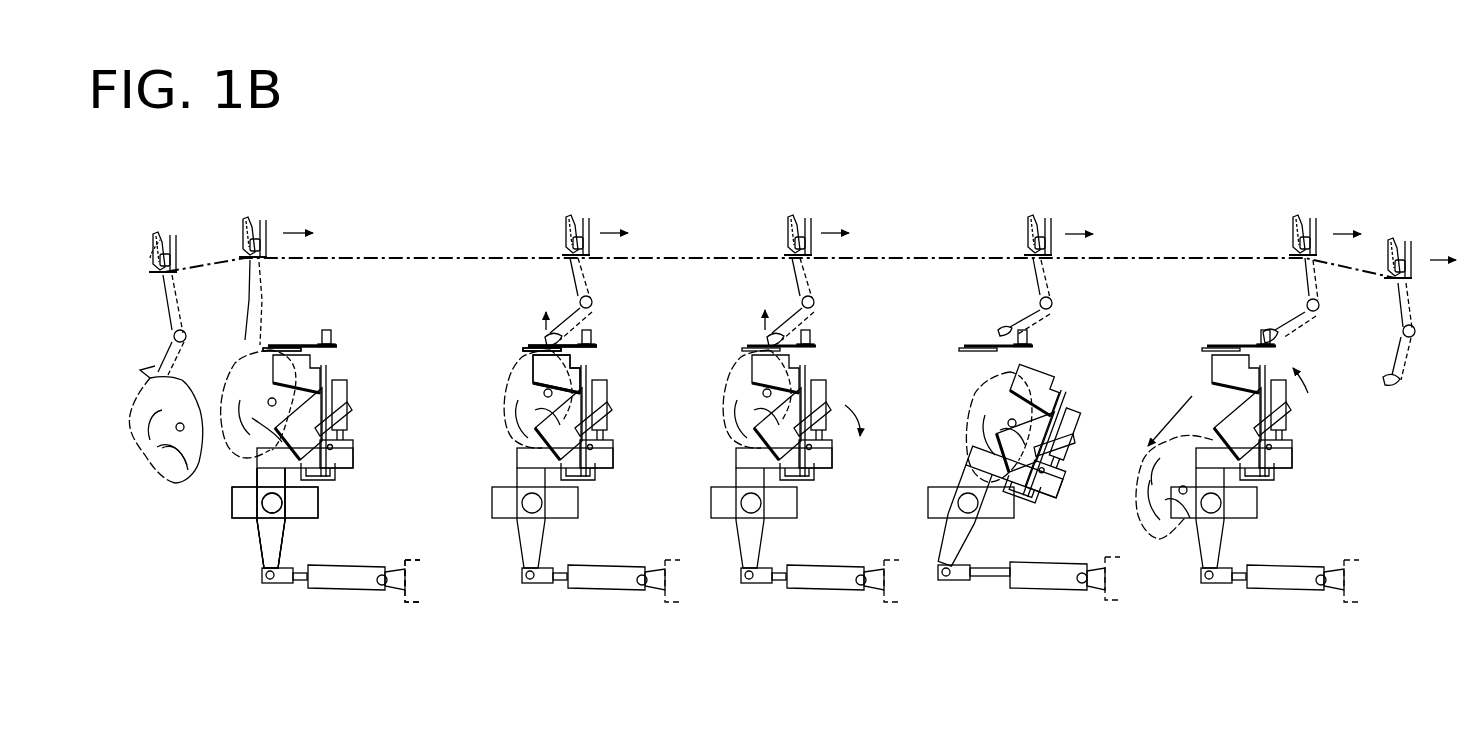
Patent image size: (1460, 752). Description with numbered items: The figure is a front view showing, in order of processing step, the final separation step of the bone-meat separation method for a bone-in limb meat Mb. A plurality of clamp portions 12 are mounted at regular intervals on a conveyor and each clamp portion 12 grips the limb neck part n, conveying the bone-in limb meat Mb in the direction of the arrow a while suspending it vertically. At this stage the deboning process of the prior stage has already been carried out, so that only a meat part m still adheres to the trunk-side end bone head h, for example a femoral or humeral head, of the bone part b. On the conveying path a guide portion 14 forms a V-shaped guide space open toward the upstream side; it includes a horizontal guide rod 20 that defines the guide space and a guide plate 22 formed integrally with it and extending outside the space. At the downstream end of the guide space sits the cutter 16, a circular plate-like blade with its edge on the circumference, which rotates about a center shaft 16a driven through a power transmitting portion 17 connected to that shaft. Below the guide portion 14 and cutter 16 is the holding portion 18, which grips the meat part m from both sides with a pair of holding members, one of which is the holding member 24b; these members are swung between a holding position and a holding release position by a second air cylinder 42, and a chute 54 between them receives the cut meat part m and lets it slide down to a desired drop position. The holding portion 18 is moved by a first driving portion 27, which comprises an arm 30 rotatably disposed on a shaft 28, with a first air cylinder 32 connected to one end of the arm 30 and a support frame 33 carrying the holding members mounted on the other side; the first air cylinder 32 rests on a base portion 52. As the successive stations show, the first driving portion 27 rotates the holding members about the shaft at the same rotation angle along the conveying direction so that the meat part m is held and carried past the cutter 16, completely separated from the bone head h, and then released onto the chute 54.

The clamp portion 12 is at (178, 258).
The arrow a is at (298, 217).
The limb neck part n is at (150, 256).
The bone-in limb meat Mb is at (161, 379).
The bone part b is at (190, 312).
The trunk-side end bone head h is at (140, 368).
The meat part m is at (137, 441).
The guide portion 14 is at (289, 330).
The cutter 16 is at (343, 345).
The center shaft 16a is at (590, 348).
The power transmitting portion 17 is at (330, 328).
The guide rod 20 is at (520, 362).
The guide plate 22 is at (528, 348).
The holding member 24b is at (300, 358).
The second air cylinder 42 is at (315, 405).
The chute 54 is at (345, 410).
The holding portion 18 is at (367, 436).
The support frame 33 is at (256, 460).
The shaft 28 is at (283, 506).
The arm 30 is at (280, 545).
The first driving portion 27 is at (248, 535).
The first air cylinder 32 is at (342, 589).
The base portion 52 is at (416, 556).